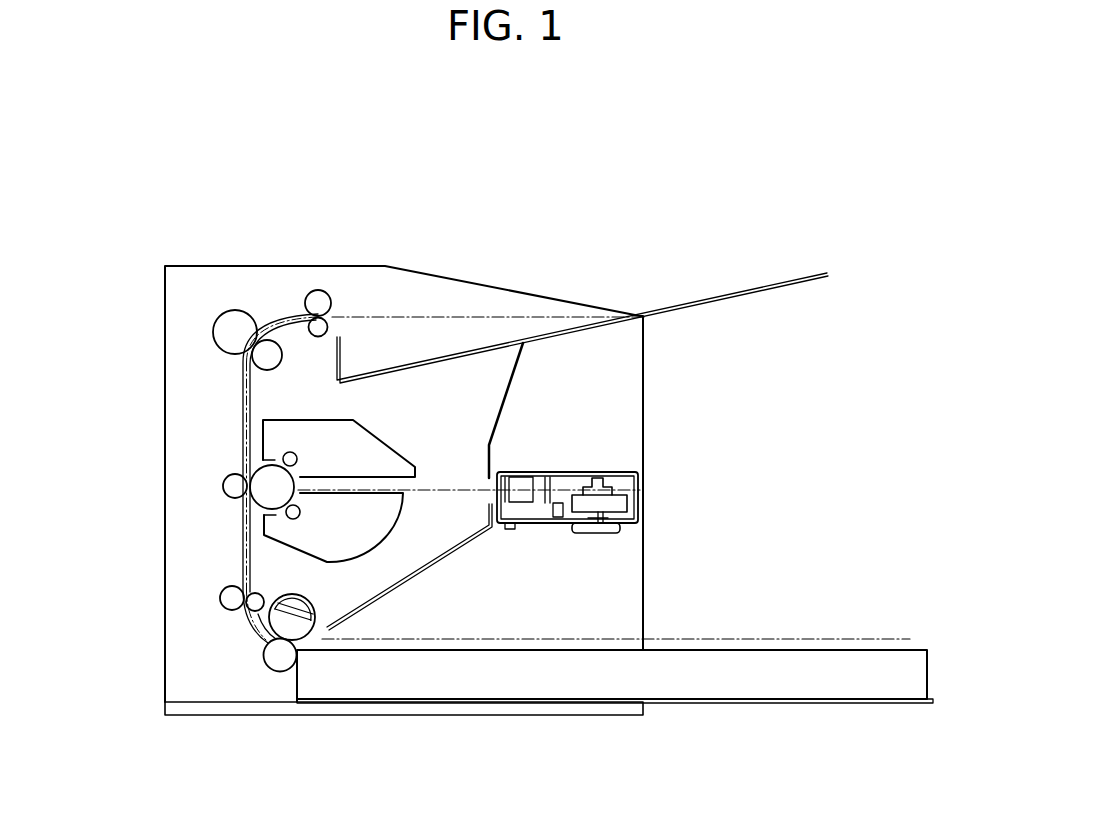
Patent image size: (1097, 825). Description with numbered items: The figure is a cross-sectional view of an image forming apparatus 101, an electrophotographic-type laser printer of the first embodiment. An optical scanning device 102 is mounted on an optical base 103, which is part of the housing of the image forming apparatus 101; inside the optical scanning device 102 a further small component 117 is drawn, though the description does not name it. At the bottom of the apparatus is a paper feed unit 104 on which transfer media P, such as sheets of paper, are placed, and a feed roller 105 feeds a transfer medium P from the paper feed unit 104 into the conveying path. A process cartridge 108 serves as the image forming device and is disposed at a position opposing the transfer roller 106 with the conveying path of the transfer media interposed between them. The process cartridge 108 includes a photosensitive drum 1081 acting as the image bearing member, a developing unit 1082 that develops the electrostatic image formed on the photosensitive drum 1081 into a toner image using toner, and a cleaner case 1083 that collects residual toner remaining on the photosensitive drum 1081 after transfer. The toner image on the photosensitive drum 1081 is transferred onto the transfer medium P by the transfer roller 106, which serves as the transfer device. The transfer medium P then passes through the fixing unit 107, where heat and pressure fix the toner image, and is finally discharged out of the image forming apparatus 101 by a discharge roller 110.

The image forming apparatus 101 is at (596, 250).
The optical scanning device 102 is at (617, 503).
The optical base 103 is at (545, 525).
The paper feed unit 104 is at (737, 705).
The feed roller 105 is at (315, 598).
The transfer roller 106 is at (232, 485).
The fixing unit 107 is at (222, 314).
The process cartridge 108 is at (382, 500).
The photosensitive drum 1081 is at (265, 472).
The developing unit 1082 is at (403, 493).
The cleaner case 1083 is at (363, 423).
The discharge roller 110 is at (321, 290).
The detection unit 117 is at (617, 505).
The transfer medium P is at (777, 638).